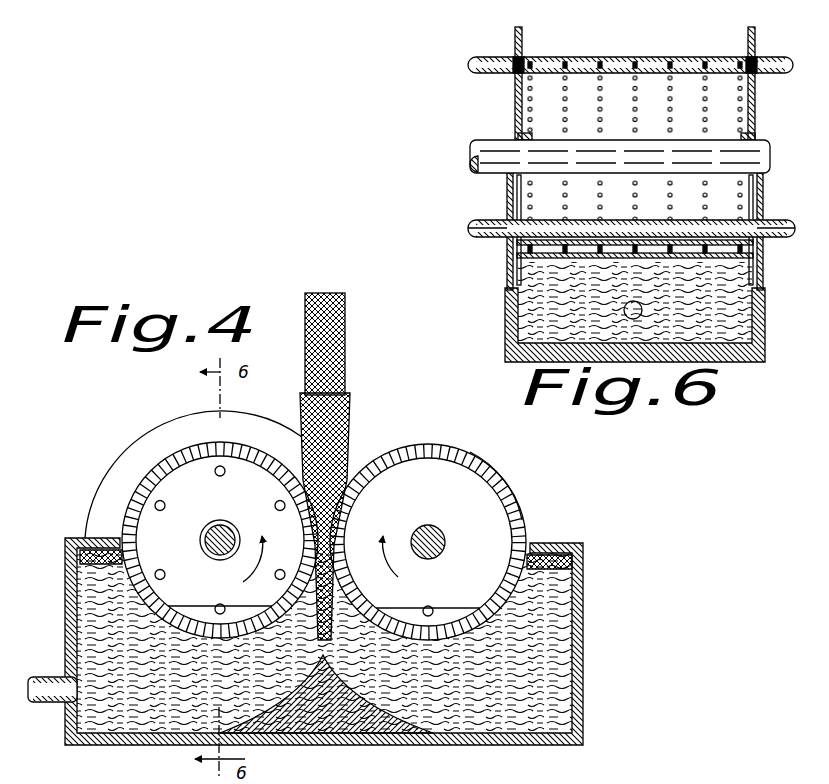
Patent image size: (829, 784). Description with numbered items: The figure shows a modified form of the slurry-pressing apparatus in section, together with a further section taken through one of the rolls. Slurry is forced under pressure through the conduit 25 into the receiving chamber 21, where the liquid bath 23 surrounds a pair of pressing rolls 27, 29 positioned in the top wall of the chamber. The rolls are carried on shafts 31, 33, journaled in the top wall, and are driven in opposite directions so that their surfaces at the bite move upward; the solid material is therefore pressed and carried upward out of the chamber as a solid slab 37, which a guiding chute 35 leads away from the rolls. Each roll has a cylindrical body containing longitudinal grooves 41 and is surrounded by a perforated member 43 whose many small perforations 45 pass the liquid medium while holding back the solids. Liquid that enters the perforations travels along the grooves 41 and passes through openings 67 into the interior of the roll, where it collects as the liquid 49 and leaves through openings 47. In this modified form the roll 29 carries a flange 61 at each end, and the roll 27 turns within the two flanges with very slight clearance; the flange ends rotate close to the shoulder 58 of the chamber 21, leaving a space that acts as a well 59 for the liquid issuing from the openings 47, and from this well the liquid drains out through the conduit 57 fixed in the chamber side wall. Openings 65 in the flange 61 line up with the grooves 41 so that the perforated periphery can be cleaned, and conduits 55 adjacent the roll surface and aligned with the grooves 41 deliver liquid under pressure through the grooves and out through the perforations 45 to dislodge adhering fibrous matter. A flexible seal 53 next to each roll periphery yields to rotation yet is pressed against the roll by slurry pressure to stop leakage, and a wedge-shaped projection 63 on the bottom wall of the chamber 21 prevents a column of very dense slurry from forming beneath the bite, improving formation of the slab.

In FIG. 4, the receiving chamber 21 is at (583, 700).
In FIG. 6, the receiving chamber 21 is at (762, 330).
In FIG. 4, the liquid bath 23 is at (574, 634).
In FIG. 4, the conduit 25 is at (50, 704).
In FIG. 4, the pressing roll 27 is at (443, 530).
In FIG. 4, the pressing roll 29 is at (150, 470).
In FIG. 4, the shaft 31 is at (446, 543).
In FIG. 4, the shaft 33 is at (205, 544).
In FIG. 6, the shaft 33 is at (480, 150).
In FIG. 4, the guiding chute 35 is at (350, 424).
In FIG. 4, the solid slab 37 is at (347, 362).
In FIG. 4, the longitudinal grooves 41 is at (462, 450).
In FIG. 6, the longitudinal grooves 41 is at (625, 58).
In FIG. 4, the perforated member 43 is at (518, 490).
In FIG. 4, the perforations 45 is at (506, 470).
In FIG. 6, the perforations 45 is at (592, 58).
In FIG. 4, the openings 47 is at (275, 506).
In FIG. 6, the openings 47 is at (506, 221).
In FIG. 4, the liquid 49 is at (433, 607).
In FIG. 4, the seal 53 is at (540, 552).
In FIG. 6, the conduits 55 is at (500, 77).
In FIG. 6, the conduit 57 is at (780, 216).
In FIG. 6, the shoulder 58 is at (510, 298).
In FIG. 6, the well 59 is at (508, 272).
In FIG. 4, the flange 61 is at (172, 425).
In FIG. 4, the wedge-shaped projection 63 is at (333, 741).
In FIG. 6, the openings 65 is at (524, 62).
In FIG. 6, the openings 67 is at (614, 238).